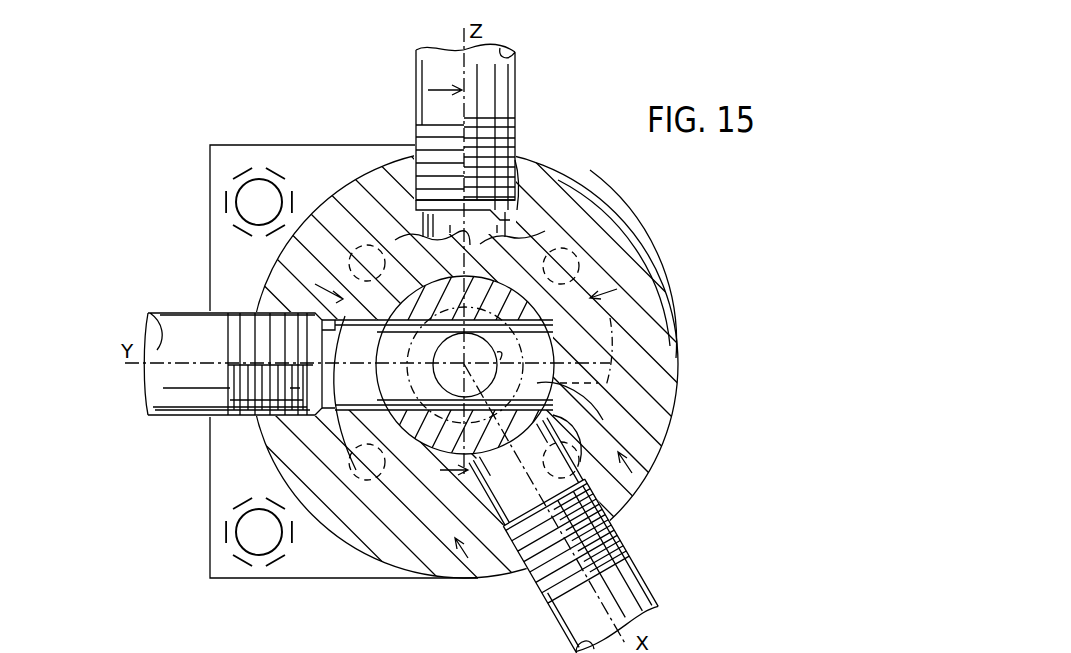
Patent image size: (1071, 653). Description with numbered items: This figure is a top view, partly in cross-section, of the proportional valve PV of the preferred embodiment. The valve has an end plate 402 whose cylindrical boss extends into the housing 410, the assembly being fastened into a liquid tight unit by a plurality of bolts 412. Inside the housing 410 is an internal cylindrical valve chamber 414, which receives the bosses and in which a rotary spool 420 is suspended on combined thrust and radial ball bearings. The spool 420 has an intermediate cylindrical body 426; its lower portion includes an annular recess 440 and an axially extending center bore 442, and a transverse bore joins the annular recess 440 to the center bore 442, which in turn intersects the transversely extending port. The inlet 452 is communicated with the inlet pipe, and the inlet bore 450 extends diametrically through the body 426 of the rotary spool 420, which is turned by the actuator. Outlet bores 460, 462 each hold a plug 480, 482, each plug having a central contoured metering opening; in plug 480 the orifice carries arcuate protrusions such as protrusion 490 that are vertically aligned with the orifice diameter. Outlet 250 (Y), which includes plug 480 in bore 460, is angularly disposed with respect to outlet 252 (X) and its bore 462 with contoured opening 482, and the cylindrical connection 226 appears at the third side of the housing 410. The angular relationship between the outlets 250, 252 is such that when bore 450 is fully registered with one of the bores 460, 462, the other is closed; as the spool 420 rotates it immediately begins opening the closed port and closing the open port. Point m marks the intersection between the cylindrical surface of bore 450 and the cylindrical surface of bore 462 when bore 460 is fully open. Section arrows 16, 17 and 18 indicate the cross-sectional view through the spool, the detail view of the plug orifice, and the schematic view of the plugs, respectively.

The Z-axis connector shaft 226 is at (516, 88).
The valve outlet 250 is at (165, 414).
The valve outlet 252 is at (647, 593).
The end plate 402 is at (360, 580).
The housing 410 is at (345, 548).
The bolts 412 is at (615, 223).
The cylindrical valve chamber 414 is at (530, 310).
The rotary spool 420 is at (522, 200).
The intermediate cylindrical body 426 is at (363, 455).
The annular recess 440 is at (603, 370).
The axially extending center bore 442 is at (540, 352).
The inlet bore 450 is at (420, 284).
The inlet 452 is at (518, 160).
The outlet bore 460 is at (347, 447).
The outlet bore 462 is at (590, 420).
The plug 480 is at (335, 418).
The plug 482 is at (477, 520).
The arcuate protrusion 490 is at (344, 328).
The point m is at (552, 416).
The proportional valve PV is at (696, 280).
The section line 16- 16 is at (438, 279).
The section line 17- 17 is at (568, 510).
The section line 18- 18 is at (461, 291).